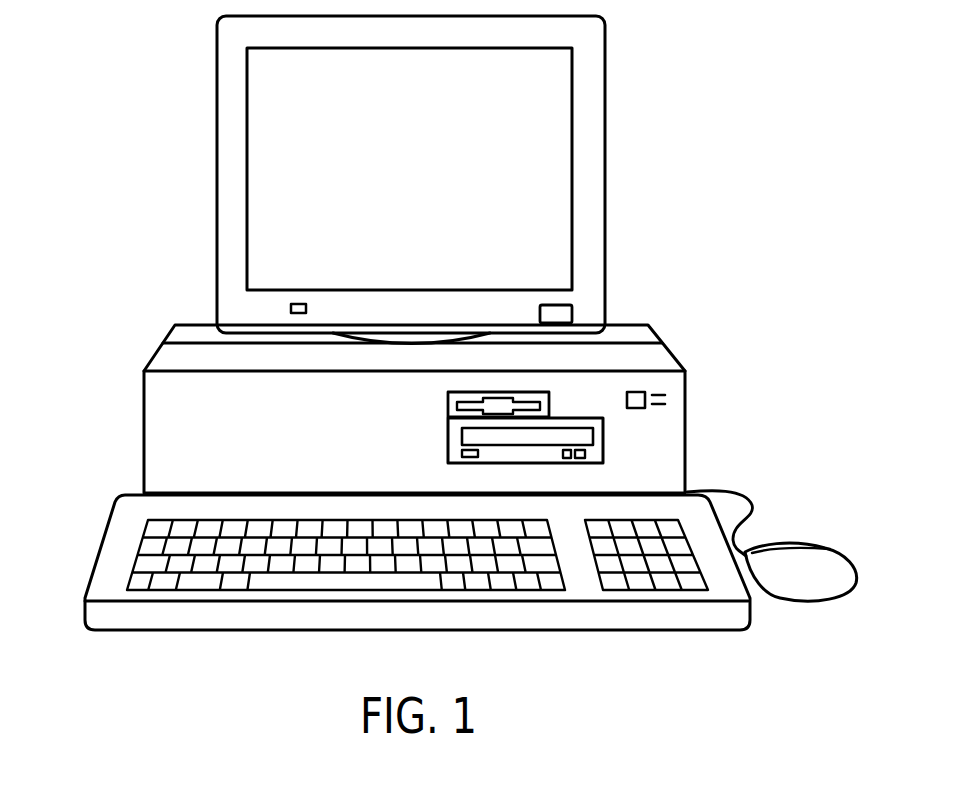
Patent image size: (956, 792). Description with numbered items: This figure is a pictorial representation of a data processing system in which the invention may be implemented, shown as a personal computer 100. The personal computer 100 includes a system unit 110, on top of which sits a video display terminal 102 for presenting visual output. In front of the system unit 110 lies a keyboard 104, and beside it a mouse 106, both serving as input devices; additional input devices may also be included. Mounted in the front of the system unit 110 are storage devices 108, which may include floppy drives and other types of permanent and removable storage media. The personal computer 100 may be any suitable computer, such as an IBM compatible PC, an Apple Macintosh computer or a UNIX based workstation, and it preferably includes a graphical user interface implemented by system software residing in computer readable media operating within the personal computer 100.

The personal computer 100 is at (740, 189).
The video display terminal 102 is at (606, 170).
The keyboard 104 is at (99, 548).
The mouse 106 is at (822, 550).
The storage devices 108 is at (448, 436).
The system unit 110 is at (144, 433).